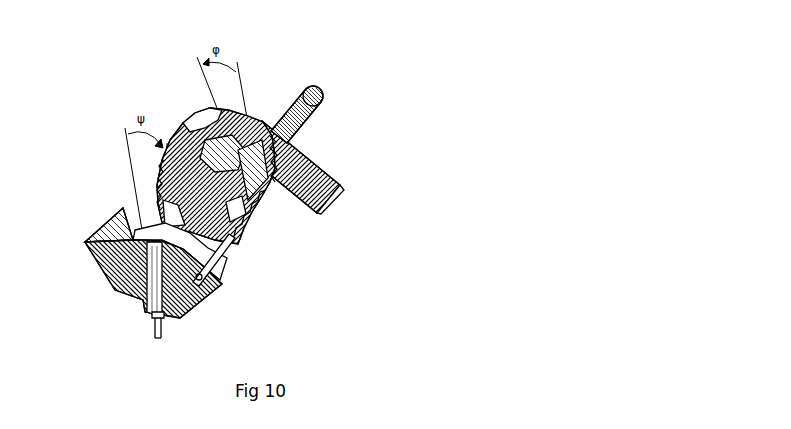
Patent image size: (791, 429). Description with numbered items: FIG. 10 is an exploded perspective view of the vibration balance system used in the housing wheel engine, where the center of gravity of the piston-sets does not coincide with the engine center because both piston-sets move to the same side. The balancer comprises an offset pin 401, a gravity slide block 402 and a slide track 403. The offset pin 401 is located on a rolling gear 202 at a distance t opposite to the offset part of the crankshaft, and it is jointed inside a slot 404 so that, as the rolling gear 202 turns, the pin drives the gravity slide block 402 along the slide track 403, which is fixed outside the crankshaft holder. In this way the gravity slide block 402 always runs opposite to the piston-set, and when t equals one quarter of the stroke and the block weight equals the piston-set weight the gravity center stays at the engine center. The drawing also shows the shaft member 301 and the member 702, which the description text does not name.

The rod / shaft 301 is at (322, 95).
The arm bar 702 is at (288, 157).
The rolling gear 202 is at (236, 243).
The offset pin 401 is at (237, 267).
The gravity slide block 402 is at (243, 280).
The slide track 403 is at (205, 305).
The slot 404 is at (158, 320).